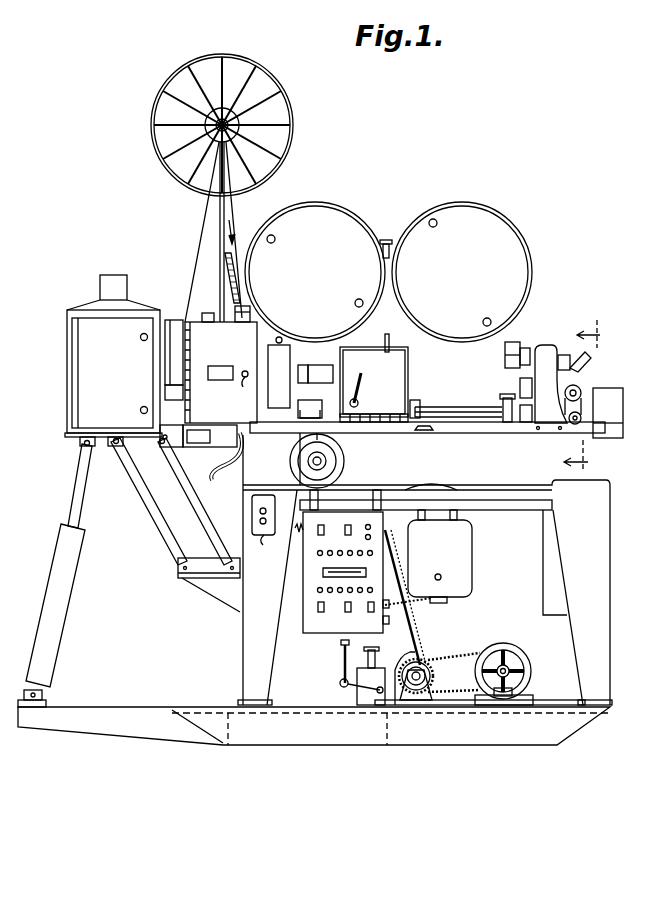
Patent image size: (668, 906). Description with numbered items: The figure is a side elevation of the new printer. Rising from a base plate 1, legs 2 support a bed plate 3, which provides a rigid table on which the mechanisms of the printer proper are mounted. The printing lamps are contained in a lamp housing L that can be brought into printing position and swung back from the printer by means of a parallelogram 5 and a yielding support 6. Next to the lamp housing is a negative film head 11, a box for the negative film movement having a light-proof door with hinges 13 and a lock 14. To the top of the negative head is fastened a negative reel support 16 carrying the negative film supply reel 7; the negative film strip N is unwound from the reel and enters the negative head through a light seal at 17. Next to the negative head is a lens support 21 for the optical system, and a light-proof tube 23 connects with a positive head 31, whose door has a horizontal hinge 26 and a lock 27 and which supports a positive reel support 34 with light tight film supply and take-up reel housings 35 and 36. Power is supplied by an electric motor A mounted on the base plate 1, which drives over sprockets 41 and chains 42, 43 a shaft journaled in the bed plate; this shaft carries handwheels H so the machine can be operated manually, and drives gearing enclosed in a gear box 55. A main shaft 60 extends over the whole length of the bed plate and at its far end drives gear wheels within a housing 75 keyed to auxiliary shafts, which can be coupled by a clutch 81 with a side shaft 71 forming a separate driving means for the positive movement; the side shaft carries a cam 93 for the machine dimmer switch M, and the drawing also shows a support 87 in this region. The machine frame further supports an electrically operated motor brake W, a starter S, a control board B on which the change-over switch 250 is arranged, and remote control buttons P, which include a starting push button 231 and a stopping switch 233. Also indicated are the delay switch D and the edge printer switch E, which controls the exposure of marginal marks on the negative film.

The base plate 1 is at (580, 725).
The legs 2 is at (248, 627).
The bed plate 3 is at (222, 438).
The parallelogram 5 is at (148, 534).
The yielding support 6 is at (58, 598).
The negative film supply reel 7 is at (292, 120).
The negative film head 11 is at (208, 380).
The hinges 13 is at (190, 400).
The locks 14 is at (237, 393).
The negative reel support 16 is at (207, 238).
The light seal 17 is at (252, 316).
The lens support 21 is at (280, 370).
The light-proof tubes 23 is at (315, 374).
The horizontal hinge 26 is at (358, 420).
The lock 27 is at (374, 382).
The positive head 31 is at (420, 368).
The positive reel support 34 is at (387, 352).
The film supply reel housing 35 is at (315, 272).
The film take-up reel housing 36 is at (462, 272).
The sprockets 41 is at (425, 678).
The chain 42 is at (462, 655).
The chain 43 is at (410, 623).
The gear box 55 is at (335, 430).
The main shaft 60 is at (462, 420).
The side shaft 71 is at (455, 405).
The housing 75 is at (625, 404).
The clutch 81 is at (585, 398).
The pillar 87 is at (549, 350).
The cam 93 is at (507, 422).
The starting push button 231 is at (260, 511).
The stopping switch 233 is at (260, 522).
The change-over switch 250 is at (313, 580).
The electric motor A is at (507, 648).
The control board B is at (308, 620).
The delay switch D is at (531, 333).
The edge printer switch E is at (512, 373).
The handwheel H is at (347, 462).
The lamp housing L is at (95, 364).
The machine dimmer switch M is at (490, 394).
The negative film strip N is at (228, 265).
The remote control buttons P is at (263, 527).
The starter S is at (458, 544).
The motor brake W is at (328, 686).